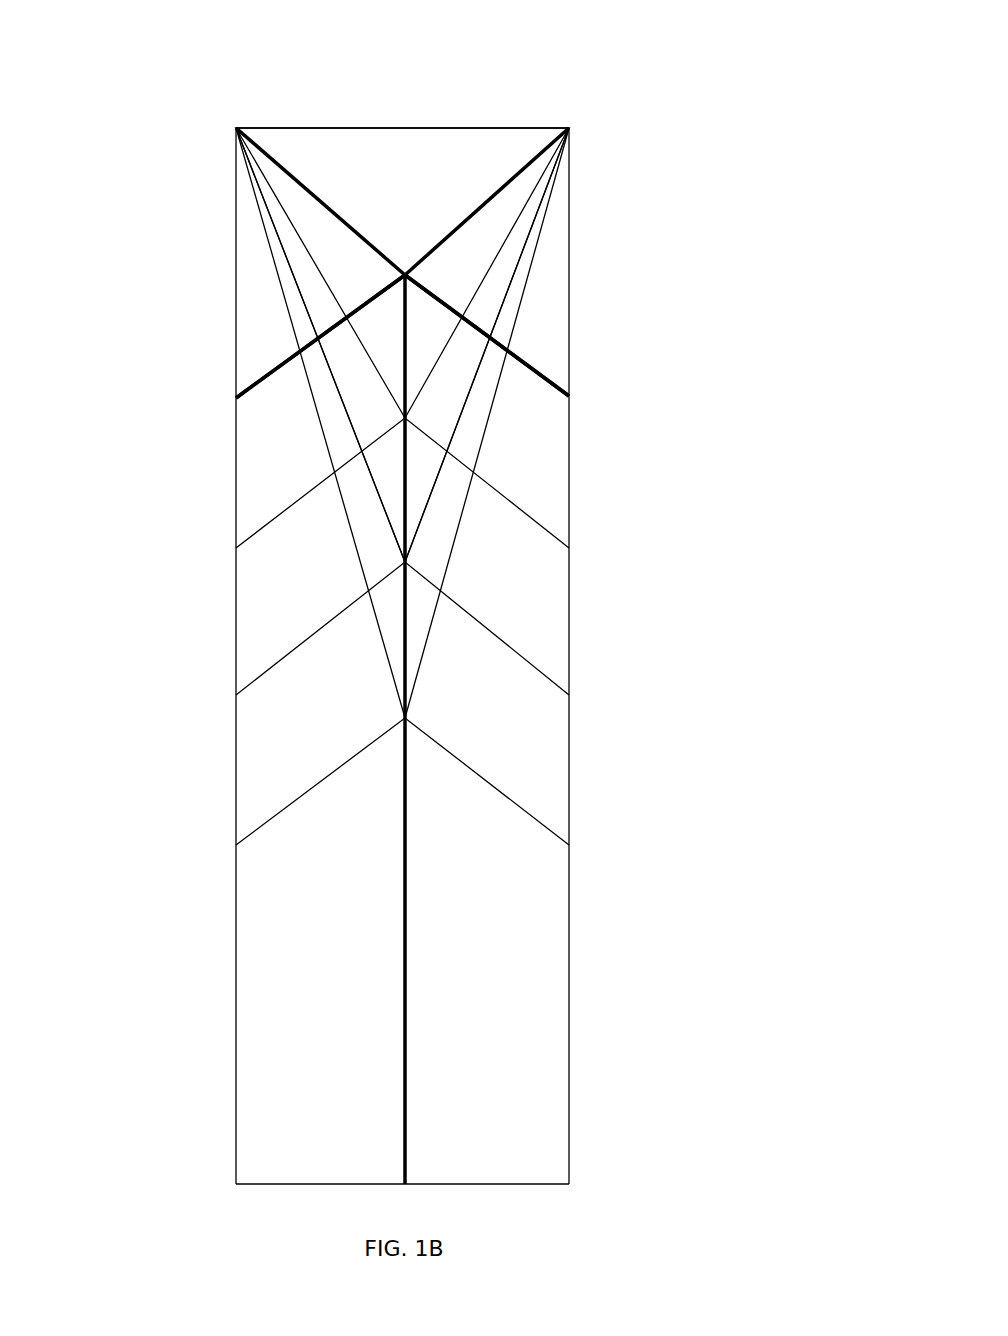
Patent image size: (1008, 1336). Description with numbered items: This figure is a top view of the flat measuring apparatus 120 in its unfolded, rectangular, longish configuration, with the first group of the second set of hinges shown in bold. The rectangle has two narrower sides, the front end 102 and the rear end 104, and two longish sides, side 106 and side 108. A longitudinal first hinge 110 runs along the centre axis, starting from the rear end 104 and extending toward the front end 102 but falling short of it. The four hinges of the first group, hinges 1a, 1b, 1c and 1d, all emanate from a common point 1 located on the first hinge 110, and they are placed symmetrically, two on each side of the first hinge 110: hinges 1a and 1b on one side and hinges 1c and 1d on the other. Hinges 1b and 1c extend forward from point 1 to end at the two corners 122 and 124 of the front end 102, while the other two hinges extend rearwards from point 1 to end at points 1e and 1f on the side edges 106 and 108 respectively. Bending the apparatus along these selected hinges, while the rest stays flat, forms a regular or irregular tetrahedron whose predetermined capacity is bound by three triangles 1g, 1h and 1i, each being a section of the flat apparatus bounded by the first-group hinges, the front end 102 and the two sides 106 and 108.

The folded sheet pattern 120 is at (121, 38).
The front end 102 is at (524, 127).
The rear end 104 is at (334, 1188).
The side 106 is at (573, 1086).
The side 108 is at (232, 1086).
The first hinge 110 is at (407, 982).
The corner 122 is at (571, 128).
The corner 124 is at (234, 128).
The point 1 is at (409, 273).
The hinge 1a is at (519, 355).
The hinge 1b is at (483, 199).
The hinge 1c is at (321, 198).
The hinge 1d is at (282, 362).
The point 1e is at (575, 397).
The point 1f is at (234, 400).
The triangle 1g is at (462, 273).
The triangle 1h is at (350, 265).
The triangle 1i is at (398, 192).